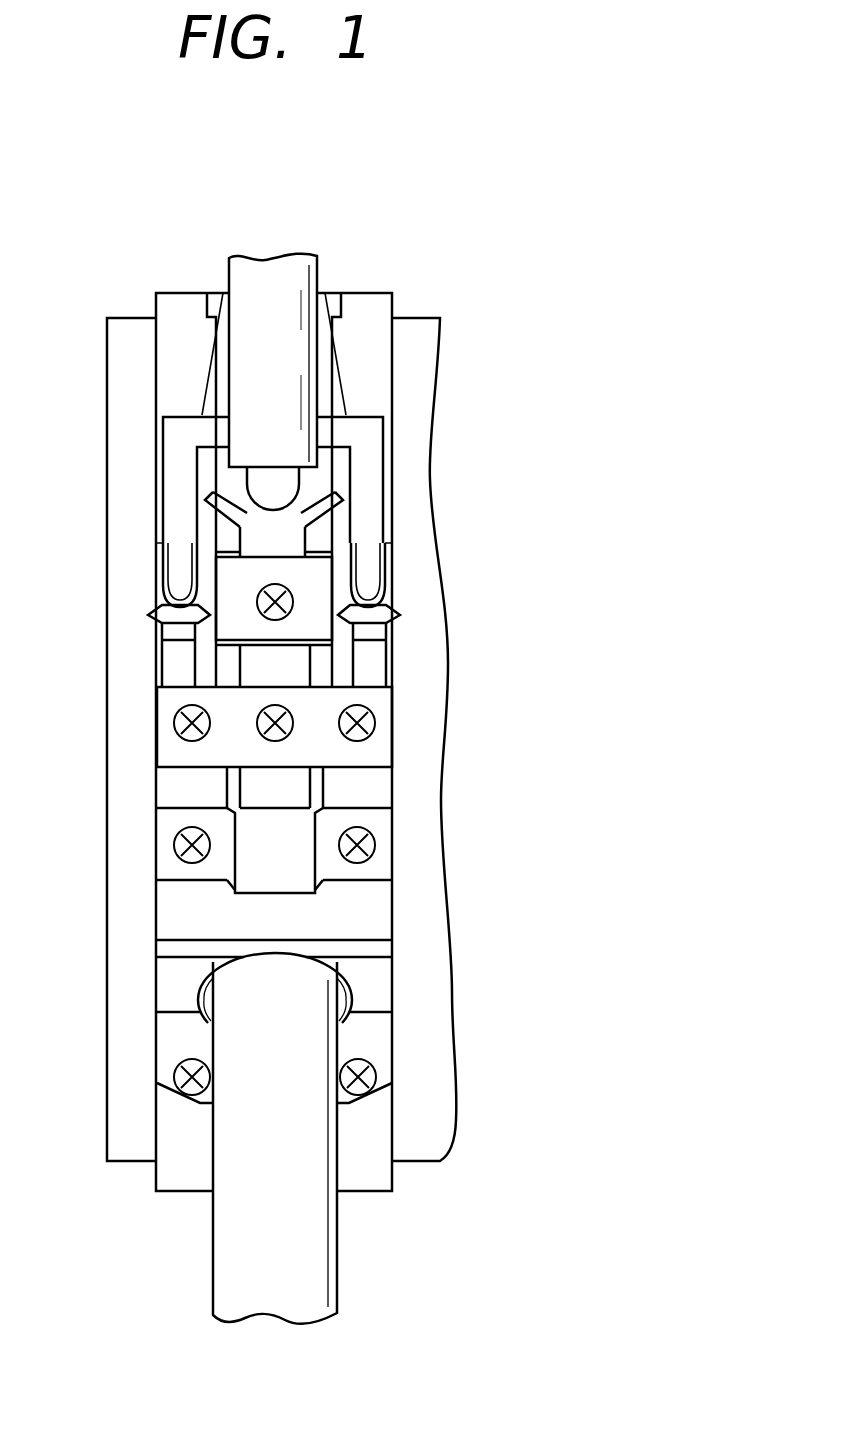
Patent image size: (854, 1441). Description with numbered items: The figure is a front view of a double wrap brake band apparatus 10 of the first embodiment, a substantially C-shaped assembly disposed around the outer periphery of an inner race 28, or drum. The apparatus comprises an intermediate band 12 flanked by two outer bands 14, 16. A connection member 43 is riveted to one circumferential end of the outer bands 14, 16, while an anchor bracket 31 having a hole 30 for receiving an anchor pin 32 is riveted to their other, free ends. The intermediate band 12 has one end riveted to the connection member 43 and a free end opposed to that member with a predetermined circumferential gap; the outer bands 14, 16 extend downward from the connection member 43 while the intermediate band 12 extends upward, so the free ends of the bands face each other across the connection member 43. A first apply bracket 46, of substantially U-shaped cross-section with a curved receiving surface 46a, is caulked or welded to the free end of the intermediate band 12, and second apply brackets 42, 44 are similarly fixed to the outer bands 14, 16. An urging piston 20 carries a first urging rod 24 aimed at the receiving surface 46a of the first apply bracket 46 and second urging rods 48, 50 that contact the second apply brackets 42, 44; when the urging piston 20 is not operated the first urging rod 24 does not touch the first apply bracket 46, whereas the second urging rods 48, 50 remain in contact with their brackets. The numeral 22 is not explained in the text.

The double wrap brake band apparatus 10 is at (517, 205).
The intermediate band 12 is at (323, 297).
The outer band 14 is at (184, 303).
The outer band 16 is at (371, 298).
The urging piston 20 is at (273, 242).
The gripped bar 22 is at (248, 265).
The first urging rod 24 is at (288, 478).
The inner race 28 is at (425, 338).
The hole 30 is at (342, 995).
The anchor bracket 31 is at (382, 860).
The anchor pin 32 is at (302, 1282).
The second apply bracket 42 is at (175, 628).
The connection member 43 is at (382, 747).
The second apply bracket 44 is at (378, 628).
The first apply bracket 46 is at (293, 538).
The receiving surface 46a is at (287, 514).
The second urging rod 48 is at (170, 590).
The second urging rod 50 is at (377, 583).